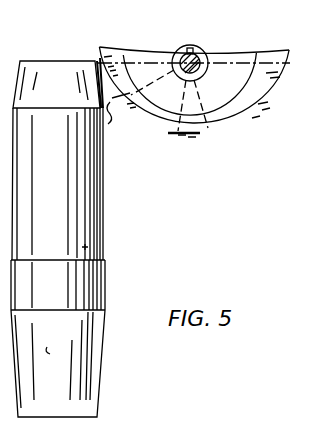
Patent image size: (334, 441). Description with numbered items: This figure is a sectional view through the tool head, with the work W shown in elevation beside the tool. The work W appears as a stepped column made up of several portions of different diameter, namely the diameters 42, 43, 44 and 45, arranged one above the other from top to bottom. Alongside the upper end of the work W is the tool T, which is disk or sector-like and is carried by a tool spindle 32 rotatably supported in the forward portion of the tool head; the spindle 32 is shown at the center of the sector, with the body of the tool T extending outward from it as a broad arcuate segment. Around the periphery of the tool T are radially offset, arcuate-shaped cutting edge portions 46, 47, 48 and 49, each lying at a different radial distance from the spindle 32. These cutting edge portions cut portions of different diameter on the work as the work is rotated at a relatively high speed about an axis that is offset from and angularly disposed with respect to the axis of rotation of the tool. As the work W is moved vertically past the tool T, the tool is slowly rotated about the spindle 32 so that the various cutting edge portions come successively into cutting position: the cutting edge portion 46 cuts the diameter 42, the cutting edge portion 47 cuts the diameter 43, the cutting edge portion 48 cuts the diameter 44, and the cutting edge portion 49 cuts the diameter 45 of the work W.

The diameter of the work 42 is at (42, 66).
The diameter of the work 43 is at (95, 213).
The diameter of the work 44 is at (98, 289).
The diameter of the work 45 is at (90, 350).
The work W is at (88, 247).
The tool T is at (194, 98).
The tool spindle 32 is at (184, 56).
The cutting edge portion 46 is at (118, 121).
The cutting edge portion 47 is at (154, 143).
The cutting edge portion 48 is at (201, 144).
The cutting edge portion 49 is at (252, 125).